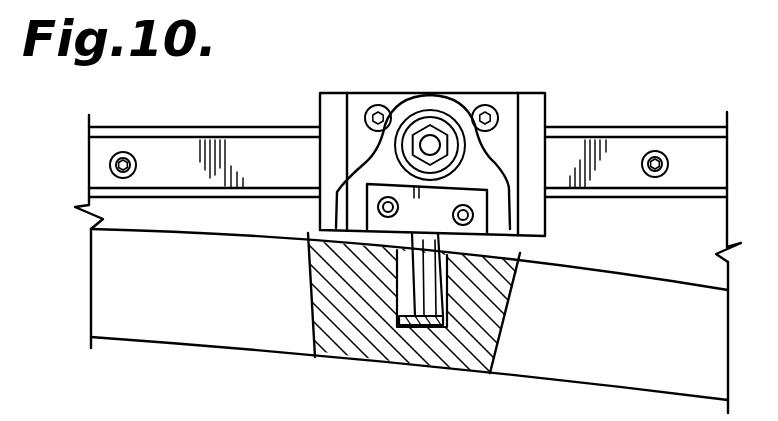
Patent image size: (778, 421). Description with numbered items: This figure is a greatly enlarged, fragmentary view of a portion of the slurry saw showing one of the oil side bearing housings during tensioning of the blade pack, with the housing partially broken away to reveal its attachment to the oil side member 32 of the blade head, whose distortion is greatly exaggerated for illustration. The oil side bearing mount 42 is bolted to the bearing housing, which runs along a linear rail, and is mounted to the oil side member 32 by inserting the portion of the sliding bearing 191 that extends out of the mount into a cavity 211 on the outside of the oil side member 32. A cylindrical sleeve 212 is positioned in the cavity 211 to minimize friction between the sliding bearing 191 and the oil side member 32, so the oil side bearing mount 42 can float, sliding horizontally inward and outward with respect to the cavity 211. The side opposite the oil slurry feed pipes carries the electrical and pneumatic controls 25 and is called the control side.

The electrical and pneumatic controls 25 is at (237, 138).
The oil side bearing mount 42 is at (445, 93).
The sliding bearing 191 is at (421, 271).
The cavity 211 is at (471, 316).
The cylindrical sleeve 212 is at (395, 300).
The oil side member 32 is at (172, 330).